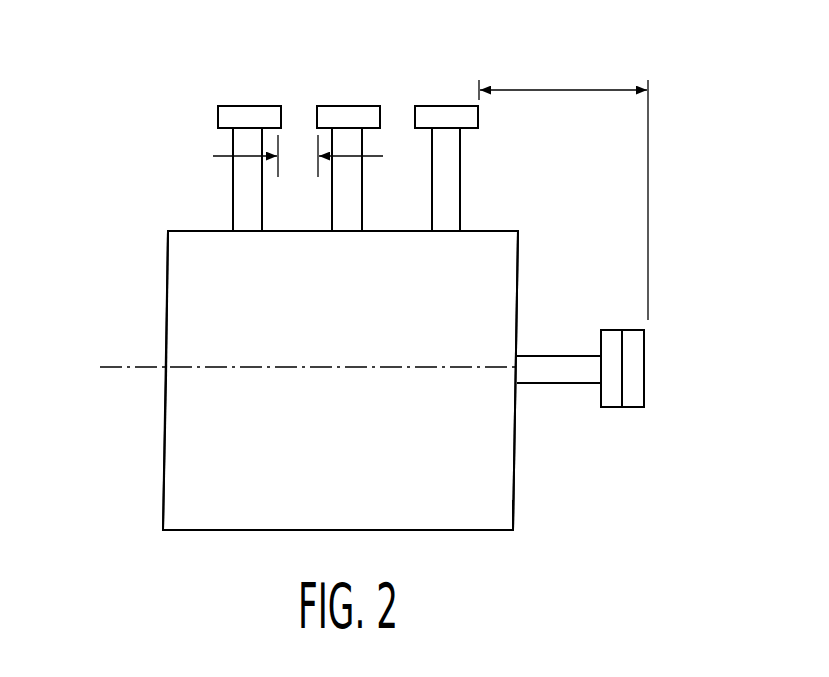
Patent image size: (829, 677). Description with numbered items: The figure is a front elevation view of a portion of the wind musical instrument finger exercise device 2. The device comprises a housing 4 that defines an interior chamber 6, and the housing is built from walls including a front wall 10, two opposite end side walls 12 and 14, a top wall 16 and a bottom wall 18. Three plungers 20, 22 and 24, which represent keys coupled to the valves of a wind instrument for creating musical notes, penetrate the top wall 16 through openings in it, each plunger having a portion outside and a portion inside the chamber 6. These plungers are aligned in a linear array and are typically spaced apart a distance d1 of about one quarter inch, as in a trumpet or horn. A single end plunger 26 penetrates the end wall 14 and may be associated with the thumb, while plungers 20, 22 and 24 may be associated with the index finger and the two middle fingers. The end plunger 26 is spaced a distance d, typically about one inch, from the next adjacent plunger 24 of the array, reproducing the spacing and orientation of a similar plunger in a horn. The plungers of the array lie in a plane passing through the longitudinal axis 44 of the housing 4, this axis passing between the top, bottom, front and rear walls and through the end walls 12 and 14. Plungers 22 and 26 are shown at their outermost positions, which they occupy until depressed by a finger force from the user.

The wind musical instrument finger exercise device 2 is at (377, 290).
The housing 4 is at (535, 260).
The interior chamber 6 is at (507, 452).
The front wall 10 is at (176, 477).
The end side wall 12 is at (167, 297).
The end side wall 14 is at (513, 508).
The top wall 16 is at (488, 231).
The bottom wall 18 is at (272, 536).
The plunger 20 is at (208, 119).
The plunger 22 is at (397, 121).
The plunger 24 is at (453, 95).
The end plunger 26 is at (620, 337).
The longitudinal axis 44 is at (110, 366).
The distance d is at (566, 90).
The distance d1 is at (298, 158).